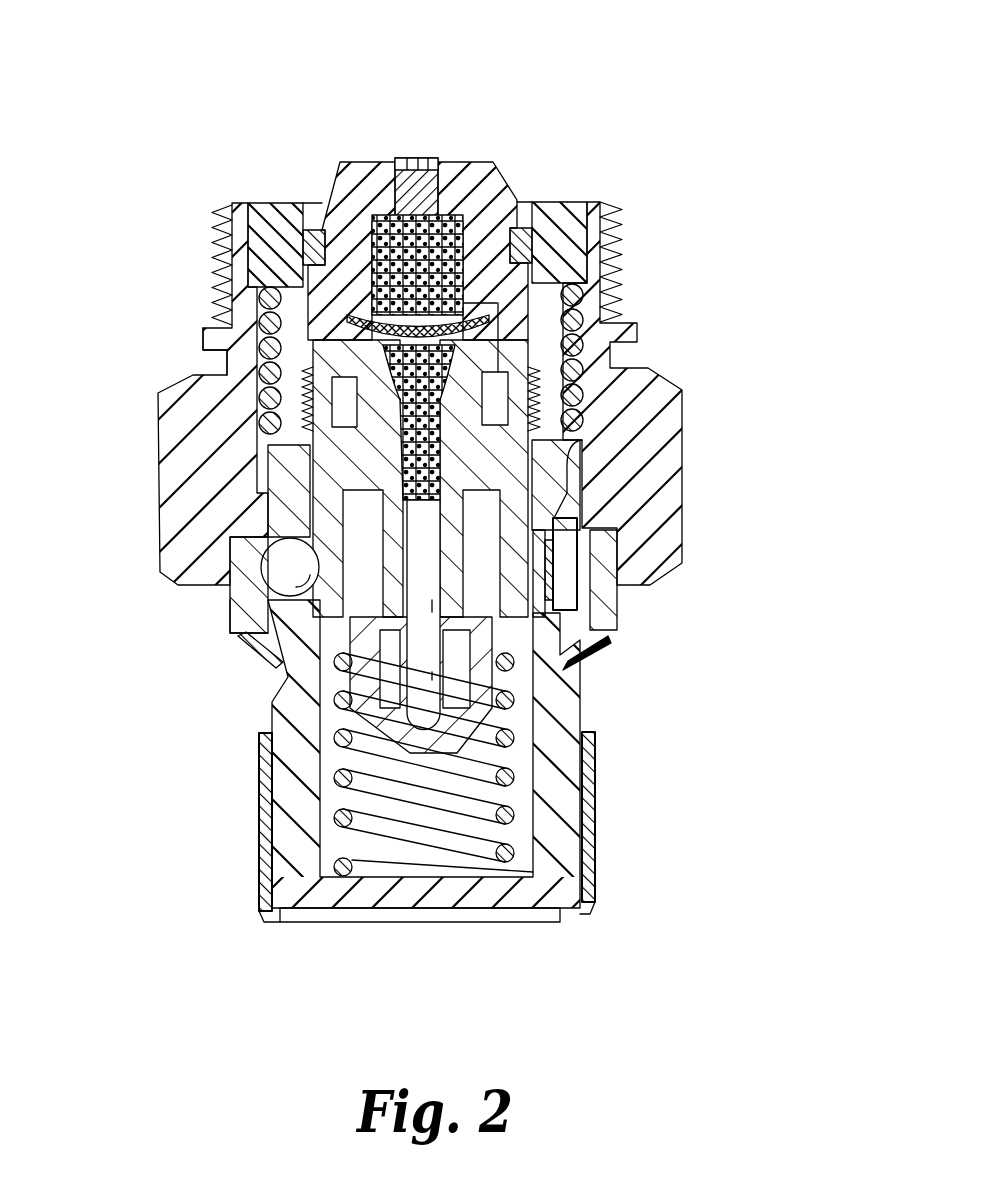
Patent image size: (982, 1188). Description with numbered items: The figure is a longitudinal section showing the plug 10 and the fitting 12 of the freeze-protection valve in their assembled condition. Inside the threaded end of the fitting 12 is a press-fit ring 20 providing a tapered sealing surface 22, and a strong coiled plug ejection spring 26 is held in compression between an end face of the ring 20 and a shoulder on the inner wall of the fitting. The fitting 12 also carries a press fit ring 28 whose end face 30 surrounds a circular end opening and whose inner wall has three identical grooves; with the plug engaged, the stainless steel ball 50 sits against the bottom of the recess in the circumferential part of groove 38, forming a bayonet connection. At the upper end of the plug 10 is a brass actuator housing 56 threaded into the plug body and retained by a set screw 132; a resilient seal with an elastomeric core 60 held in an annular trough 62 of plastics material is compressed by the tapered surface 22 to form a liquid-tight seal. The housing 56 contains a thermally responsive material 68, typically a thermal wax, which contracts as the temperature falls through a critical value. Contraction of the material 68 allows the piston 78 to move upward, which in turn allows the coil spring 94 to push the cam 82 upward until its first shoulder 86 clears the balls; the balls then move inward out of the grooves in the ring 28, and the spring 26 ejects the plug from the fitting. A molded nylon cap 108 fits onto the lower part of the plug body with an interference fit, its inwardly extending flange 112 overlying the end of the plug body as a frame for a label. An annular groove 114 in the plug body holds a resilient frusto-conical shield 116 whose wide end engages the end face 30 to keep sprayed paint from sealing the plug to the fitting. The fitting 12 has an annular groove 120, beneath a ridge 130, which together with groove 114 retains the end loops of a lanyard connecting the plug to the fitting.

The plug 10 is at (491, 516).
The fitting 12 is at (491, 393).
The press-fit ring 20 is at (557, 215).
The tapered sealing surface 22 is at (520, 222).
The plug ejection spring 26 is at (215, 405).
The press fit ring 28 is at (230, 623).
The end face 30 is at (245, 645).
The groove 38 is at (230, 588).
The ball 50 is at (262, 545).
The actuator housing 56 is at (372, 180).
The elastomeric core 60 is at (310, 226).
The annular trough 62 is at (318, 232).
The thermally responsive material 68 is at (440, 255).
The piston 78 is at (597, 822).
The cam 82 is at (583, 760).
The first shoulder 86 is at (262, 772).
The coil spring 94 is at (543, 923).
The cap 108 is at (600, 860).
The inwardly extending flange 112 is at (282, 923).
The annular groove 114 is at (567, 675).
The shield 116 is at (600, 663).
The annular groove 120 is at (613, 360).
The ridge 130 is at (205, 330).
The set screw 132 is at (425, 158).